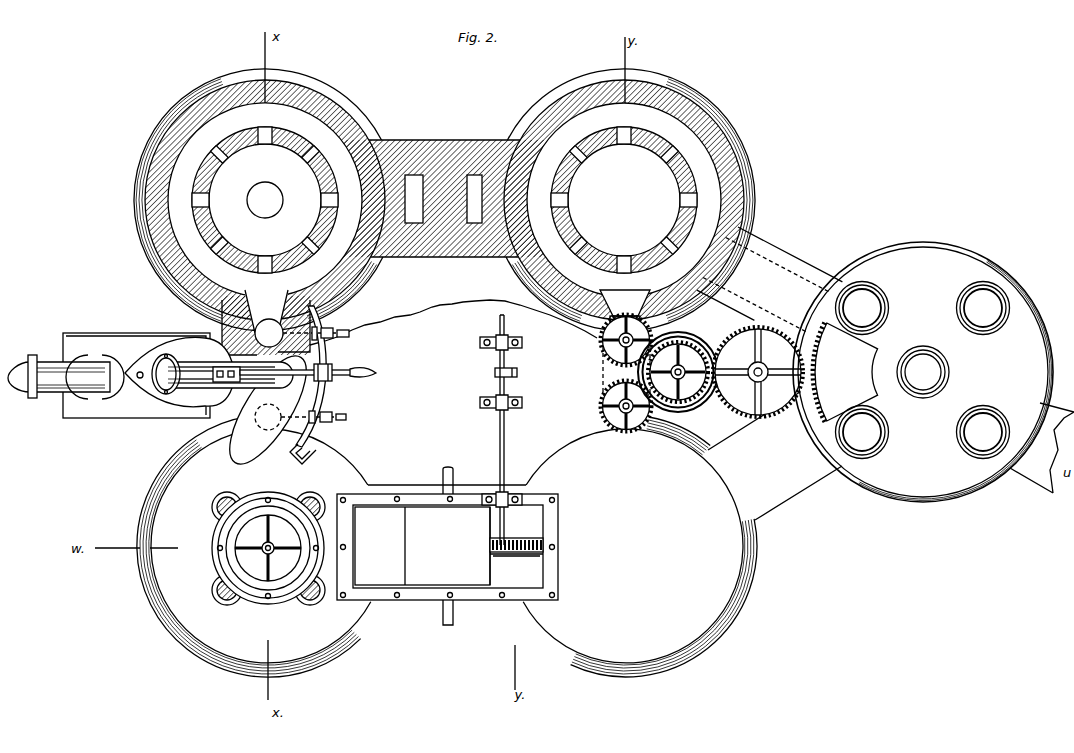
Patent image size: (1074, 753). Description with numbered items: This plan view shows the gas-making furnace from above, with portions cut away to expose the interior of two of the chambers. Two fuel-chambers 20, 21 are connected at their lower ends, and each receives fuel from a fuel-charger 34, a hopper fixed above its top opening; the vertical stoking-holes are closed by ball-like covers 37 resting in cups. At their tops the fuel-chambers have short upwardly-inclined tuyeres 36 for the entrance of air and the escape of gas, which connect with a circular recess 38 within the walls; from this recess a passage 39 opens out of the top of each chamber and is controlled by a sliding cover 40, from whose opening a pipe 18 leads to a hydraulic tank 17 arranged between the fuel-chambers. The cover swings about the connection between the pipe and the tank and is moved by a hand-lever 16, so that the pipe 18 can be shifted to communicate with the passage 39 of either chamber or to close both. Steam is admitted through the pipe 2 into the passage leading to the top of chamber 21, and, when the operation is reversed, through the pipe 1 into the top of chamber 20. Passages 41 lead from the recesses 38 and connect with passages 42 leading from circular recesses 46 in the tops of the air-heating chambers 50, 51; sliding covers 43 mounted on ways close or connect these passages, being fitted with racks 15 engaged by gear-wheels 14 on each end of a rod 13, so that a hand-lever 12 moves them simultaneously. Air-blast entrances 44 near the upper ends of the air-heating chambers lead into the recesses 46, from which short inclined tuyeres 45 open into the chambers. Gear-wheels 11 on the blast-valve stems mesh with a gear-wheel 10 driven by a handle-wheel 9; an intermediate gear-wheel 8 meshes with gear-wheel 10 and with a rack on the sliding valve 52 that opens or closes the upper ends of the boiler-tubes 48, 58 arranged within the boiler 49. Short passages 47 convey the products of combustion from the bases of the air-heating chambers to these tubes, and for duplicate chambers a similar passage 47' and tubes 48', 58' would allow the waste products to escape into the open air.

The pipe 1 is at (318, 413).
The pipe 2 is at (311, 328).
The intermediate gear-wheel 8 is at (758, 372).
The handle-wheel 9 is at (692, 400).
The gear-wheel 10 is at (696, 344).
The gear-wheels 11 is at (600, 417).
The hand-lever 12 is at (509, 368).
The rod 13 is at (504, 446).
The gear-wheels 14 is at (496, 557).
The racks 15 is at (521, 541).
The hand-lever 16 is at (294, 368).
The hydraulic tank 17 is at (136, 375).
The pipe 18 is at (209, 371).
The fuel-chamber 20 is at (254, 546).
The fuel-chamber 21 is at (126, 228).
The fuel-charger 34 is at (268, 548).
The tuyeres 36 is at (265, 200).
The ball-like cover 37 is at (238, 598).
The circular recess 38 is at (265, 217).
The passage 39 is at (269, 367).
The sliding cover 40 is at (268, 410).
The passages 41 is at (414, 199).
The passages 42 is at (475, 199).
The sliding covers 43 is at (447, 546).
The air-blast entrances 44 is at (625, 303).
The tuyeres 45 is at (624, 200).
The circular recesses 46 is at (624, 200).
The short passages 47 is at (770, 373).
The passage 47' is at (1042, 448).
The boiler-tube 48 is at (862, 432).
The tube 48' is at (983, 432).
The boiler 49 is at (923, 372).
The air-heating chamber 50 is at (640, 547).
The air-heating chamber 51 is at (640, 200).
The sliding valve 52 is at (845, 372).
The boiler-tube 58 is at (862, 308).
The tube 58' is at (983, 308).